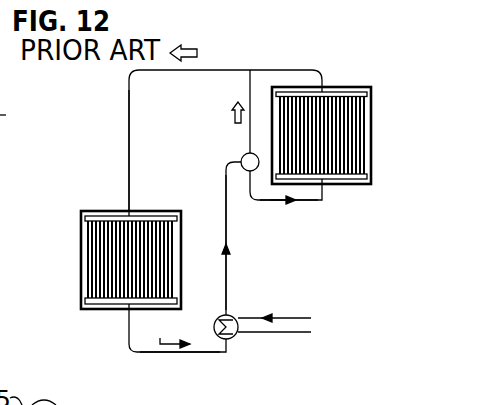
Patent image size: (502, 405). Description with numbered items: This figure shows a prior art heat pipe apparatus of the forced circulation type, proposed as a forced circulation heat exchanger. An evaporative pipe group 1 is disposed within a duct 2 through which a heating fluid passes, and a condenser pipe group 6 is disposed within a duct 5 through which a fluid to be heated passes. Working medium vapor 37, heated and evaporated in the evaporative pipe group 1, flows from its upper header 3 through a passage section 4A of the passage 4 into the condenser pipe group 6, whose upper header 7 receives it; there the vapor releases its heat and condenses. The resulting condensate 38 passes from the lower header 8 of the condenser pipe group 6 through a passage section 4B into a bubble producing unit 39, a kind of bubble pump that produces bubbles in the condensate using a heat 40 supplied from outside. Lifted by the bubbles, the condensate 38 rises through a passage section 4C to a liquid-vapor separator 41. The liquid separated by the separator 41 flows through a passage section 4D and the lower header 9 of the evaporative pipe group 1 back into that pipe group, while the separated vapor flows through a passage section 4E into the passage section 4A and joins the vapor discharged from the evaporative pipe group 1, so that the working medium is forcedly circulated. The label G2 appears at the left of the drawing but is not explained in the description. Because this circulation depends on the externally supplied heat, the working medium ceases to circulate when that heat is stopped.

The evaporative pipe group 1 is at (356, 115).
The duct 2 is at (371, 137).
The upper header 3 is at (347, 92).
The passage 4 is at (152, 72).
The passage section 4A is at (129, 142).
The passage section 4B is at (197, 352).
The passage section 4C is at (227, 280).
The passage section 4D is at (255, 200).
The passage section 4E is at (249, 82).
The duct 5 is at (181, 278).
The condenser pipe group 6 is at (161, 243).
The upper header 7 is at (100, 212).
The lower header 8 is at (104, 304).
The lower header 9 is at (355, 179).
The working medium vapor 37 is at (198, 50).
The condensate 38 is at (170, 330).
The bubble producing unit 39 is at (234, 335).
The heat 40 is at (300, 316).
The liquid-vapor separator 41 is at (244, 158).
The gas flow label G2 is at (18, 117).